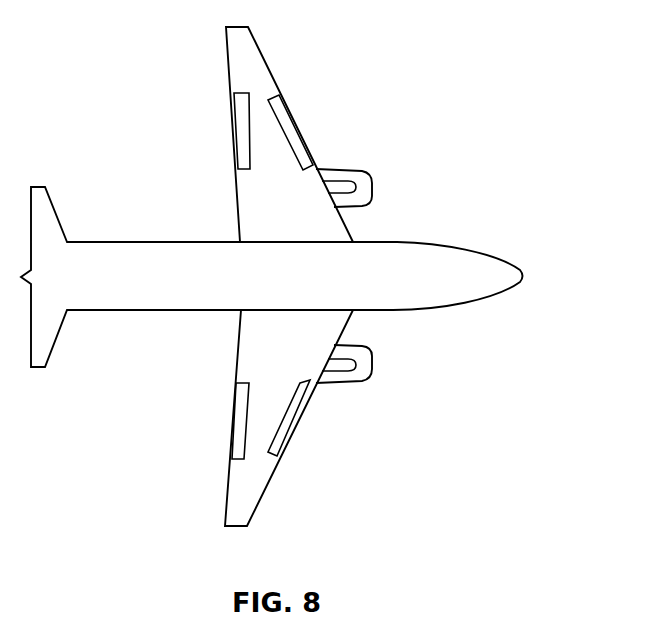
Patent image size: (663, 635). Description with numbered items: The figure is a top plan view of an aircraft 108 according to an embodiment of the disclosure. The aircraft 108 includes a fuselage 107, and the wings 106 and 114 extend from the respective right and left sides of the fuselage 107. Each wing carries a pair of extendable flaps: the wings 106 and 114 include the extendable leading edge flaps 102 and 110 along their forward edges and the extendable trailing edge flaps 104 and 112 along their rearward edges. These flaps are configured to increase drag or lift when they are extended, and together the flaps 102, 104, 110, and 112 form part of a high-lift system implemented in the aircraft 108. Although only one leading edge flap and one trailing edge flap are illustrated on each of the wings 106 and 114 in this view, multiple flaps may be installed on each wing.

The extendable leading edge flap 102 is at (293, 413).
The extendable trailing edge flap 104 is at (240, 417).
The wing 106 is at (271, 480).
The fuselage 107 is at (445, 267).
The aircraft 108 is at (490, 117).
The extendable leading edge flap 110 is at (292, 137).
The extendable trailing edge flap 112 is at (240, 135).
The wing 114 is at (271, 72).